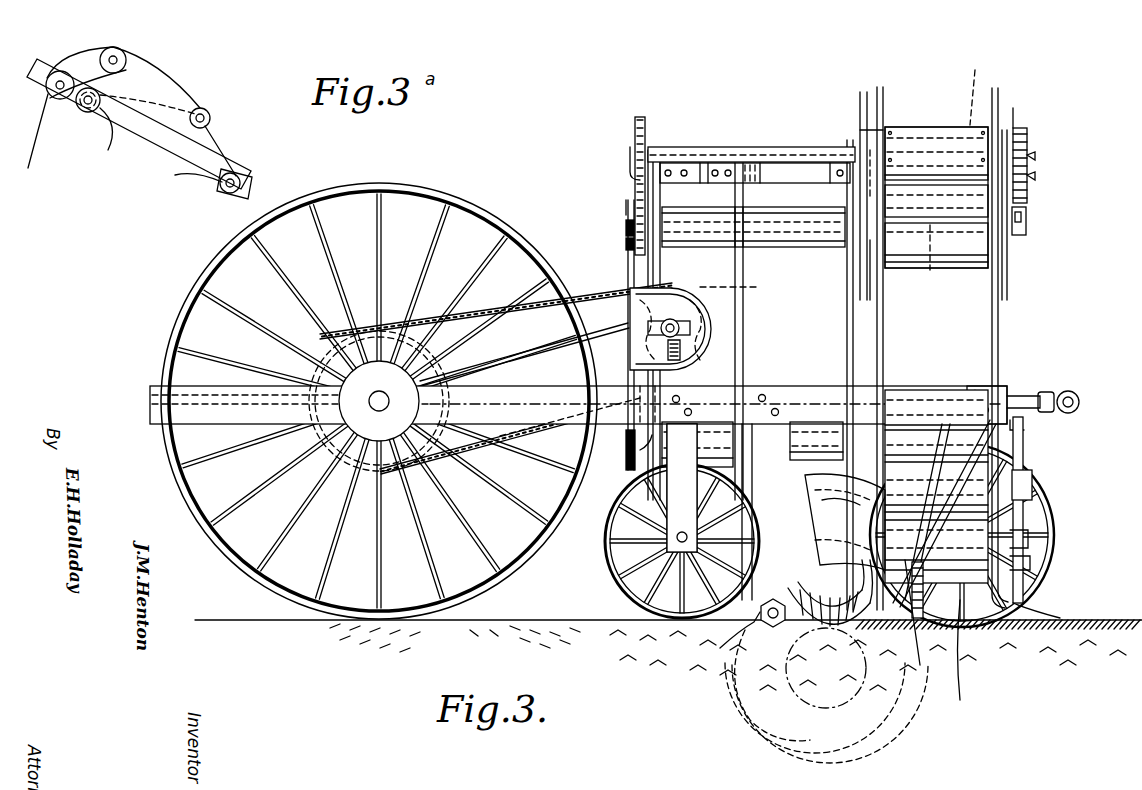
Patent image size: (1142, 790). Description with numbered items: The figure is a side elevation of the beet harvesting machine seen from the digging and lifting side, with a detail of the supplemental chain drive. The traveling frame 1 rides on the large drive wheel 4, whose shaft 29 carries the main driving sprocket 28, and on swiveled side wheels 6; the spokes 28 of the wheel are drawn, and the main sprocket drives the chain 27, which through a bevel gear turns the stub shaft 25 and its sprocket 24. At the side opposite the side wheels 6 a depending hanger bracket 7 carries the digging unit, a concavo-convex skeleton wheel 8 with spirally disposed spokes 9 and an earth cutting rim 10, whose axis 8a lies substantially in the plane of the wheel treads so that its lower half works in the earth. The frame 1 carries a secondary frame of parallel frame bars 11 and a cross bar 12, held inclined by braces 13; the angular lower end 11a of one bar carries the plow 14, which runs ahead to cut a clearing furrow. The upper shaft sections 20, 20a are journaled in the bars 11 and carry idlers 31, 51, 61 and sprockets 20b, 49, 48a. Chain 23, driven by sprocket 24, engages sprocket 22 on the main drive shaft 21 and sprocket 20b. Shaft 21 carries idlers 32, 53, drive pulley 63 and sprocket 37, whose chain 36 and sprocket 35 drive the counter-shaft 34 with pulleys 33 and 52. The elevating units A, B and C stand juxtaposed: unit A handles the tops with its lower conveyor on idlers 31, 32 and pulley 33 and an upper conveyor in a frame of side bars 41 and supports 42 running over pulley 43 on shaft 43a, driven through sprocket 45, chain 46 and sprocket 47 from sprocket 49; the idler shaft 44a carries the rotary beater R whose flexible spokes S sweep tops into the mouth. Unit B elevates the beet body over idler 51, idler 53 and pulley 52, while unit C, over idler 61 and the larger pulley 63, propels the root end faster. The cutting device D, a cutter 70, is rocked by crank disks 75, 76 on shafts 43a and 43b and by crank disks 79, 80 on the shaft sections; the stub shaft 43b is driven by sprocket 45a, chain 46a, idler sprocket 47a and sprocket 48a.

In FIG. 3, the traveling frame 1 is at (578, 411).
In FIG. 3, the drive wheel 4 is at (460, 204).
In FIG. 3, the swiveled side wheels 6 is at (605, 560).
In FIG. 3, the hanger bracket 7 is at (849, 521).
In FIG. 3, the concavo-convex wheel 8 is at (905, 692).
In FIG. 3, the axis of the wheel 8a is at (732, 672).
In FIG. 3, the spirally disposed spokes 9 is at (840, 735).
In FIG. 3, the earth cutting rim 10 is at (880, 738).
In FIG. 3, the parallel frame bars 11 is at (846, 330).
In FIG. 3, the lower end of frame bar 11a is at (965, 690).
In FIG. 3, the cross bar 12 is at (755, 173).
In FIG. 3, the braces 13 is at (618, 298).
In FIG. 3, the plow 14 is at (1045, 616).
In FIG. 3A, the upper shaft section 20 is at (35, 147).
In FIG. 3, the upper shaft section 20 is at (622, 232).
In FIG. 3, the upper shaft section 20a is at (1018, 272).
In FIG. 3A, the sprocket 20b is at (86, 112).
In FIG. 3, the sprocket 20b is at (622, 248).
In FIG. 3A, the main drive shaft 21 is at (226, 192).
In FIG. 3, the main drive shaft 21 is at (610, 495).
In FIG. 3A, the sprocket 22 is at (200, 183).
In FIG. 3, the sprocket 22 is at (626, 453).
In FIG. 3A, the chain 23 is at (225, 148).
In FIG. 3, the chain 23 is at (626, 272).
In FIG. 3A, the sprocket 24 is at (212, 114).
In FIG. 3, the sprocket 24 is at (630, 340).
In FIG. 3, the stub shaft 25 is at (736, 293).
In FIG. 3, the chain 27 is at (527, 314).
In FIG. 3, the main driving sprocket 28 is at (445, 342).
In FIG. 3, the shaft of traction wheel 29 is at (372, 410).
In FIG. 3, the idler 31 is at (906, 275).
In FIG. 3, the idler 32 is at (936, 486).
In FIG. 3, the driving pulley 33 is at (925, 674).
In FIG. 3, the counter-shaft 34 is at (1040, 540).
In FIG. 3, the sprocket 35 is at (1034, 562).
In FIG. 3, the chain 36 is at (1028, 460).
In FIG. 3, the sprocket 37 is at (1025, 420).
In FIG. 3, the side bars 41 is at (990, 340).
In FIG. 3, the supports 42 is at (1000, 130).
In FIG. 3, the pulley 43 is at (936, 196).
In FIG. 3, the shaft of pulley 43 43a is at (1033, 112).
In FIG. 3A, the stub shaft 43b is at (120, 74).
In FIG. 3, the stub shaft 43b is at (760, 147).
In FIG. 3, the idler shaft 44a is at (936, 517).
In FIG. 3, the sprocket 45 is at (1036, 158).
In FIG. 3A, the sprocket wheel 45a is at (126, 58).
In FIG. 3, the sprocket wheel 45a is at (633, 130).
In FIG. 3, the chain 46 is at (1036, 178).
In FIG. 3A, the chain 46a is at (120, 90).
In FIG. 3, the chain 46a is at (630, 165).
In FIG. 3, the sprocket 47 is at (1030, 135).
In FIG. 3A, the idler sprocket 47a is at (55, 98).
In FIG. 3A, the sprocket 48a is at (109, 144).
In FIG. 3, the sprocket 48a is at (630, 206).
In FIG. 3, the sprocket 49 is at (1028, 230).
In FIG. 3, the idler pulley 51 is at (818, 246).
In FIG. 3, the driving pulley 52 is at (808, 550).
In FIG. 3, the idler 53 is at (815, 435).
In FIG. 3, the idler pulley 61 is at (718, 245).
In FIG. 3, the drive pulley 63 is at (712, 430).
In FIG. 3, the cutter 70 is at (878, 300).
In FIG. 3, the crank disk 75 is at (860, 130).
In FIG. 3, the crank disk 76 is at (880, 130).
In FIG. 3, the crank disk 79 is at (860, 250).
In FIG. 3, the crank disk 80 is at (887, 240).
In FIG. 3, the elevating unit A is at (923, 109).
In FIG. 3, the elevating unit B is at (798, 134).
In FIG. 3, the conveyor unit C is at (702, 134).
In FIG. 3, the cutting device D is at (868, 98).
In FIG. 3, the rotary beater R is at (1034, 486).
In FIG. 3, the flexible spokes S is at (1025, 595).